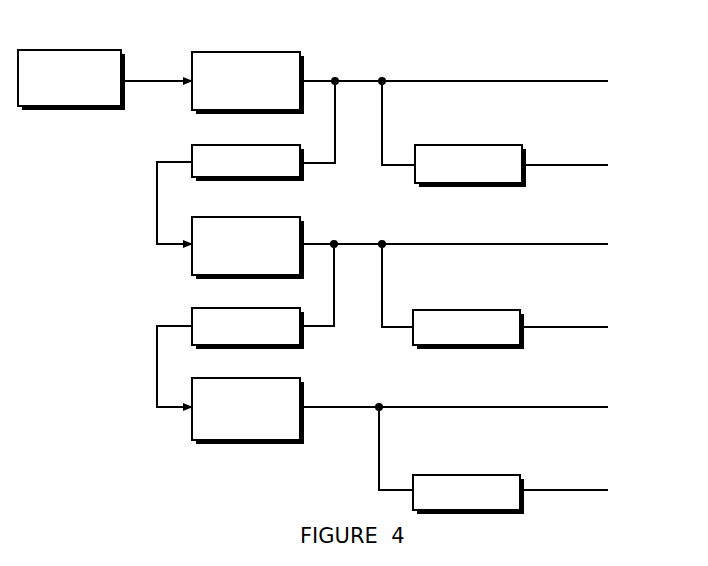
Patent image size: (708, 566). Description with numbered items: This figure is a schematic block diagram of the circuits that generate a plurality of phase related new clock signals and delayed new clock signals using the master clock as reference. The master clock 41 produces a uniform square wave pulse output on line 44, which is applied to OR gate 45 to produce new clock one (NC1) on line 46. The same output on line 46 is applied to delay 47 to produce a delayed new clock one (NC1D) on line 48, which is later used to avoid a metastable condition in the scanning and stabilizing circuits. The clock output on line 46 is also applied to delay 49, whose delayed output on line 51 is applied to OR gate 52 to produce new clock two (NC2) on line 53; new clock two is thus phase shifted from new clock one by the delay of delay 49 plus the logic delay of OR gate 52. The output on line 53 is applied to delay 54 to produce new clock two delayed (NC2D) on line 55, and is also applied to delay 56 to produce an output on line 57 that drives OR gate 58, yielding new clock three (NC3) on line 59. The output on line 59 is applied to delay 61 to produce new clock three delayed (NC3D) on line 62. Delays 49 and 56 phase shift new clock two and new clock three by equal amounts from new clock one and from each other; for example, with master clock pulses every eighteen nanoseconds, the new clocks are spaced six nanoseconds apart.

The master clock 41 is at (90, 50).
The line 44 is at (162, 77).
The OR gate 45 is at (277, 52).
The line 46 is at (365, 80).
The delay 47 is at (489, 145).
The line 48 is at (566, 165).
The delay 49 is at (192, 148).
The line 51 is at (155, 203).
The OR gate 52 is at (192, 262).
The line 53 is at (482, 244).
The delay 54 is at (487, 310).
The line 55 is at (562, 327).
The delay 56 is at (192, 313).
The line 57 is at (156, 369).
The OR gate 58 is at (208, 447).
The line 59 is at (461, 407).
The delay 61 is at (488, 475).
The line 62 is at (562, 490).